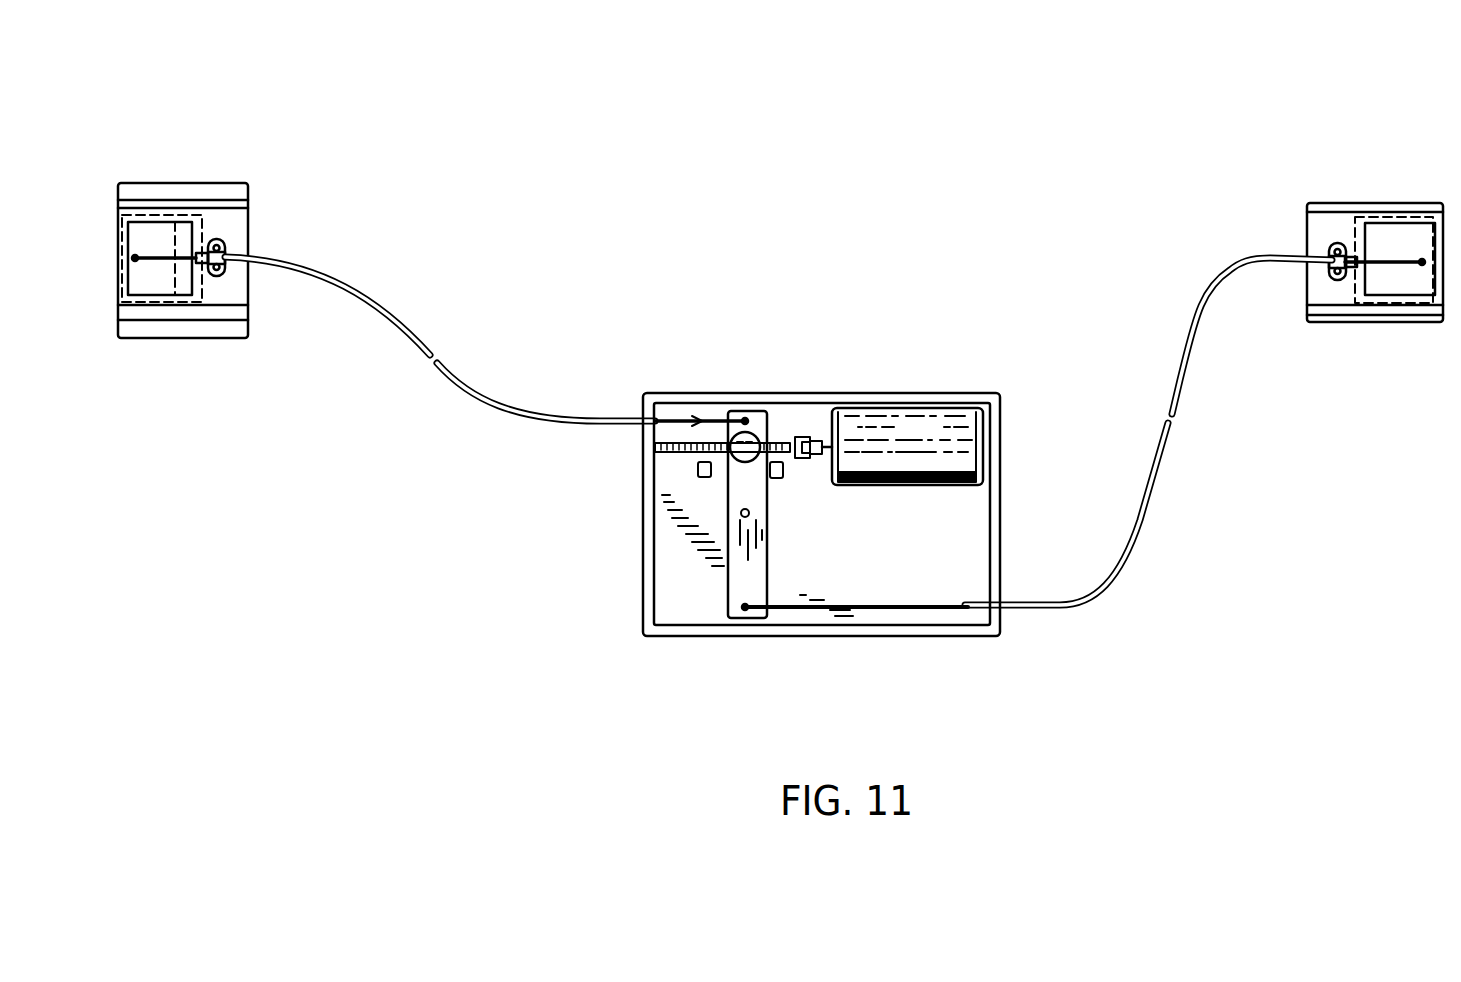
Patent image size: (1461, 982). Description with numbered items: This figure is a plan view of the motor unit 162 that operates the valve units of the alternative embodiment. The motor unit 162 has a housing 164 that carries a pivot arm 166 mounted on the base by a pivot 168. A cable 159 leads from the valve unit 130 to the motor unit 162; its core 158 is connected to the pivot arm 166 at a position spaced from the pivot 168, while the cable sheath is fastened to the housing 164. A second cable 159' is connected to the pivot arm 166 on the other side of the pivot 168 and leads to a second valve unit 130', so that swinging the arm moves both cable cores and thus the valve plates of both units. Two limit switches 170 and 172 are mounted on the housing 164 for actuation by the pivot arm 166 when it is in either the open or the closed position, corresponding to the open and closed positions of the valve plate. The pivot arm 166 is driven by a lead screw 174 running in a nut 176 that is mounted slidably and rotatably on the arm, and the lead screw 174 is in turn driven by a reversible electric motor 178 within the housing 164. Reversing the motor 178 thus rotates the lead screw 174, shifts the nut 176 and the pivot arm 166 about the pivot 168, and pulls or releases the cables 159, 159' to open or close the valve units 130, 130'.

The valve unit 130 is at (204, 217).
The second valve unit 130' is at (1351, 222).
The cable 159 is at (440, 336).
The second cable 159' is at (1148, 431).
The motor unit 162 is at (891, 378).
The housing 164 is at (835, 640).
The core 158 is at (690, 414).
The lead screw 174 is at (665, 456).
The nut 176 is at (758, 433).
The limit switch 170 is at (780, 479).
The limit switch 172 is at (700, 470).
The pivot arm 166 is at (724, 590).
The pivot 168 is at (750, 513).
The reversible electric motor 178 is at (930, 435).